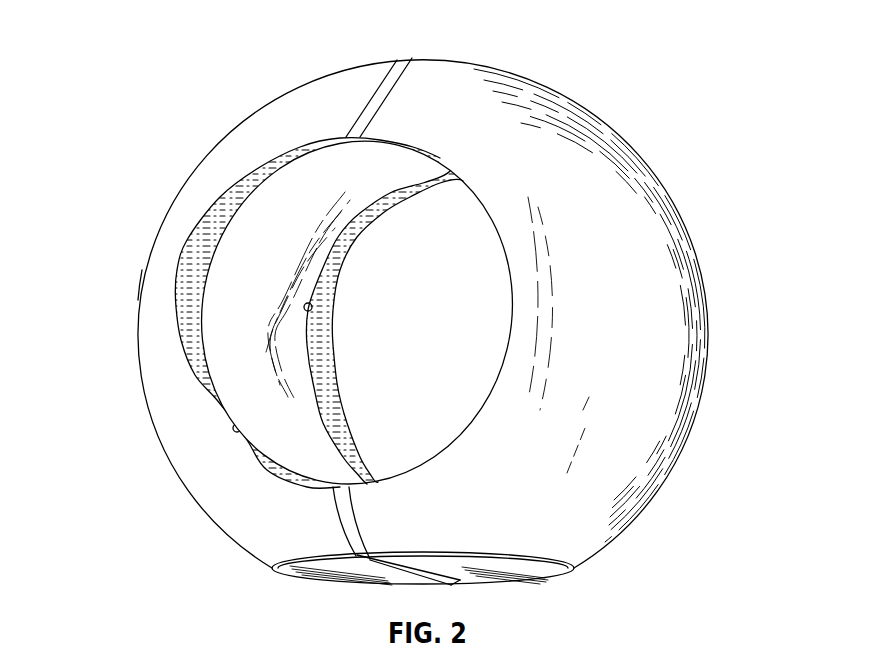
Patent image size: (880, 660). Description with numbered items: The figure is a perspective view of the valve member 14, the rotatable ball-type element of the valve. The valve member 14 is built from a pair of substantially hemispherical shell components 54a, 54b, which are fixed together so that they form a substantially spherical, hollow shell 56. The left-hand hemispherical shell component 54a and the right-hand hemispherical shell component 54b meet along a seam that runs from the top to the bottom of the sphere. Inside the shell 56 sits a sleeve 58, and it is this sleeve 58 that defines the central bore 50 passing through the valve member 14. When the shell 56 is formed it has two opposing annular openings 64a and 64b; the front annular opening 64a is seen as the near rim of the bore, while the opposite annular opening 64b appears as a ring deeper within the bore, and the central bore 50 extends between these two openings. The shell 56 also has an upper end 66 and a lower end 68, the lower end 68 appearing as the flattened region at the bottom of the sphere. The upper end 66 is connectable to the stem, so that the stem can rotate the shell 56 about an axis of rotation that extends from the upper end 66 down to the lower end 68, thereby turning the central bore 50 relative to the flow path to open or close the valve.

The valve member 14 is at (247, 63).
The central bore 50 is at (248, 418).
The hemispherical shell component 54a is at (137, 284).
The hemispherical shell component 54b is at (690, 374).
The shell 56 is at (607, 127).
The sleeve 58 is at (217, 352).
The annular opening 64a is at (216, 210).
The annular opening 64b is at (357, 252).
The upper end 66 is at (435, 56).
The lower end 68 is at (327, 583).